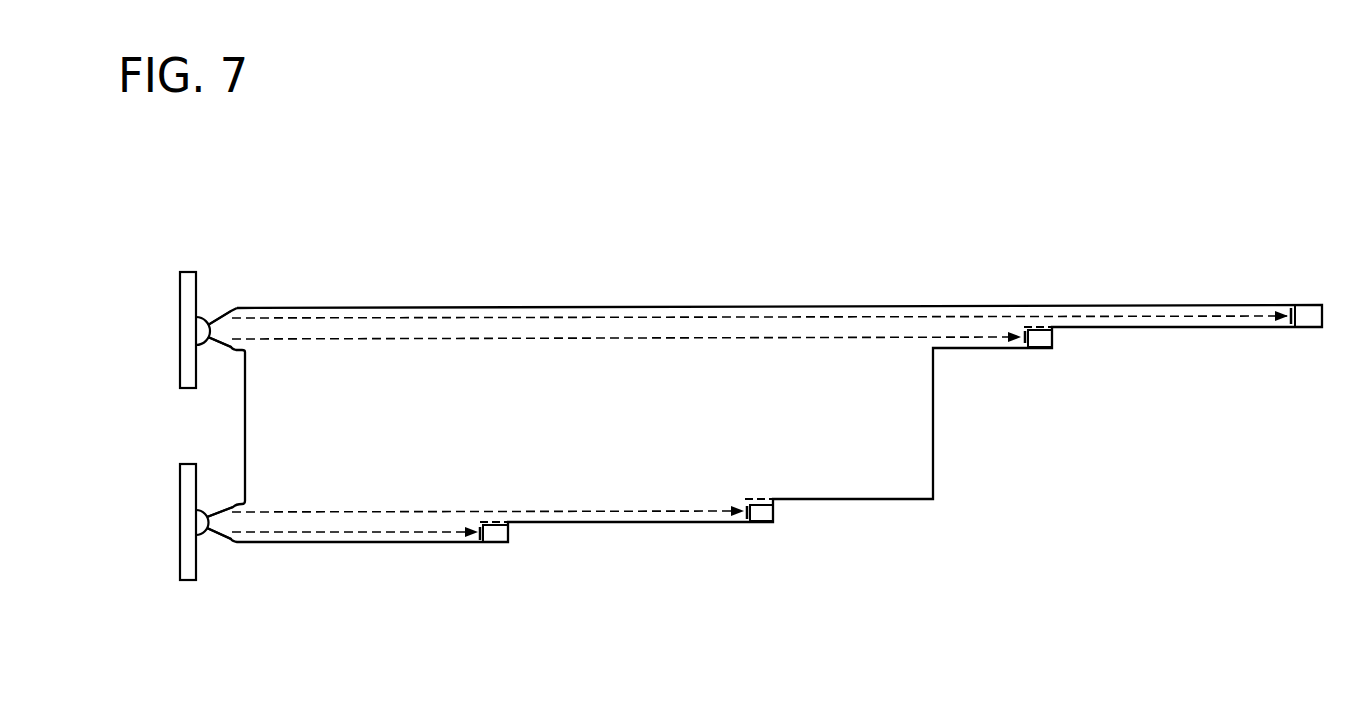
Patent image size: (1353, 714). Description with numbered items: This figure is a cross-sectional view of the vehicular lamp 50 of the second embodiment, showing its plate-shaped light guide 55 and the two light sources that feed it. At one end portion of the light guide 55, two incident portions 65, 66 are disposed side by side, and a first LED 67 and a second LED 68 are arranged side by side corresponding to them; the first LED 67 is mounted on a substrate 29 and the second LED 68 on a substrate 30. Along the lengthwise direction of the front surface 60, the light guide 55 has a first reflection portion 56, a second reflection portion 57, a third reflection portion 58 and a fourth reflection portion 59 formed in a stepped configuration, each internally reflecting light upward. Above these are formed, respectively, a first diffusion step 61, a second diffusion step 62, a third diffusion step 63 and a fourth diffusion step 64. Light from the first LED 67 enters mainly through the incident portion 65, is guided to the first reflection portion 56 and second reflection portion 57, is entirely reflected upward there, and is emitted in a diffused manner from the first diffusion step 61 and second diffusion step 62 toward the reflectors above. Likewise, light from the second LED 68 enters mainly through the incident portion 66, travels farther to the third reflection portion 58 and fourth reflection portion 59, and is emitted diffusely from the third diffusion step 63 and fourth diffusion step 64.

The vehicular lamp 50 is at (1100, 219).
The substrate 29 is at (188, 564).
The substrate 30 is at (188, 289).
The light guide 55 is at (478, 308).
The front surface 60 is at (337, 543).
The first reflection portion 56 is at (510, 535).
The second reflection portion 57 is at (775, 512).
The third reflection portion 58 is at (1052, 340).
The fourth reflection portion 59 is at (1324, 318).
The first diffusion step 61 is at (492, 522).
The second diffusion step 62 is at (762, 499).
The third diffusion step 63 is at (1037, 327).
The fourth diffusion step 64 is at (1298, 305).
The incident portion 65 is at (229, 541).
The incident portion 66 is at (230, 313).
The first LED 67 is at (200, 540).
The second LED 68 is at (203, 318).